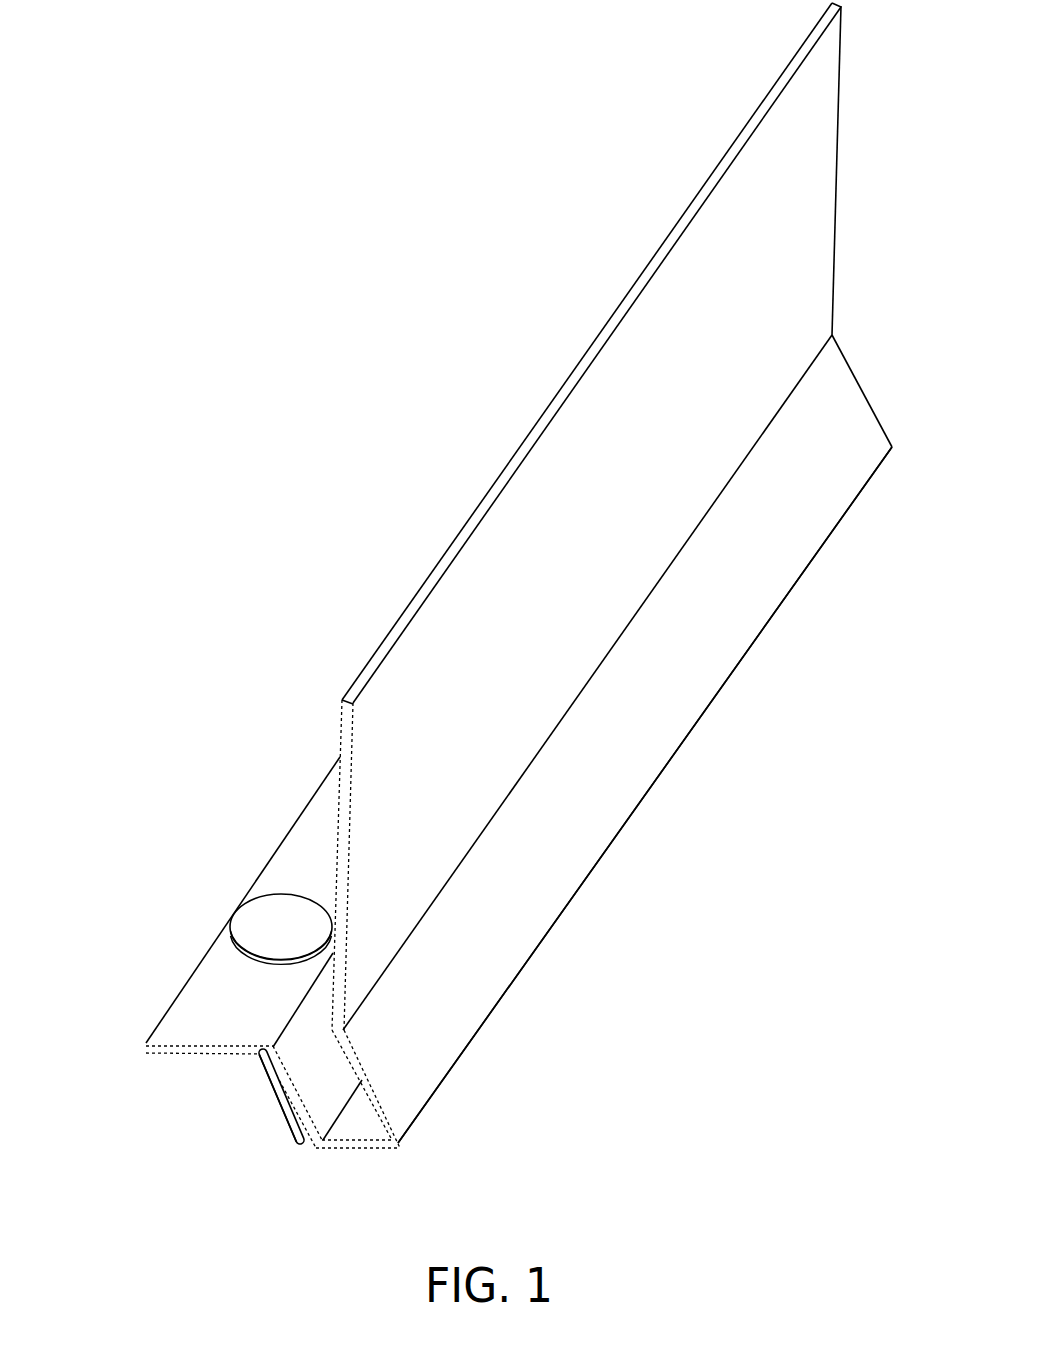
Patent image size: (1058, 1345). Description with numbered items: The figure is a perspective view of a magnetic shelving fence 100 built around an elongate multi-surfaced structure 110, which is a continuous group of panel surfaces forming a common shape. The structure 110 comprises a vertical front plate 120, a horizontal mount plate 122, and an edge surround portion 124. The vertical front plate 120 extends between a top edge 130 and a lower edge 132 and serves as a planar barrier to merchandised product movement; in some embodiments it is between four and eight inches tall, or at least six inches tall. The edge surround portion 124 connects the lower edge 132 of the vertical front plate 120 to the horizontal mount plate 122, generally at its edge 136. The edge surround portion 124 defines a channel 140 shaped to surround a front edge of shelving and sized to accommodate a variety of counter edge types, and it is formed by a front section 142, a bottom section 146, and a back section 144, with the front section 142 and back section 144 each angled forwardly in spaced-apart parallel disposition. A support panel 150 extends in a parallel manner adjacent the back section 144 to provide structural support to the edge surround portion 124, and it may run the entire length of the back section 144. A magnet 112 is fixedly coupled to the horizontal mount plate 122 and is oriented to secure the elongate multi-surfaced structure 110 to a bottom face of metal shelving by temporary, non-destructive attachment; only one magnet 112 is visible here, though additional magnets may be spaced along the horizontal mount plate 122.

The magnetic shelving fence 100 is at (473, 627).
The elongate multi-surfaced structure 110 is at (573, 565).
The magnet 112 is at (240, 888).
The vertical front plate 120 is at (620, 518).
The horizontal mount plate 122 is at (184, 906).
The edge surround portion 124 is at (326, 1163).
The top edge 130 is at (591, 353).
The lower edge 132 is at (733, 475).
The edge 136 is at (190, 1000).
The channel 140 is at (249, 1137).
The front section 142 is at (438, 1030).
The back section 144 is at (213, 1114).
The bottom section 146 is at (362, 1141).
The support panel 150 is at (192, 1098).